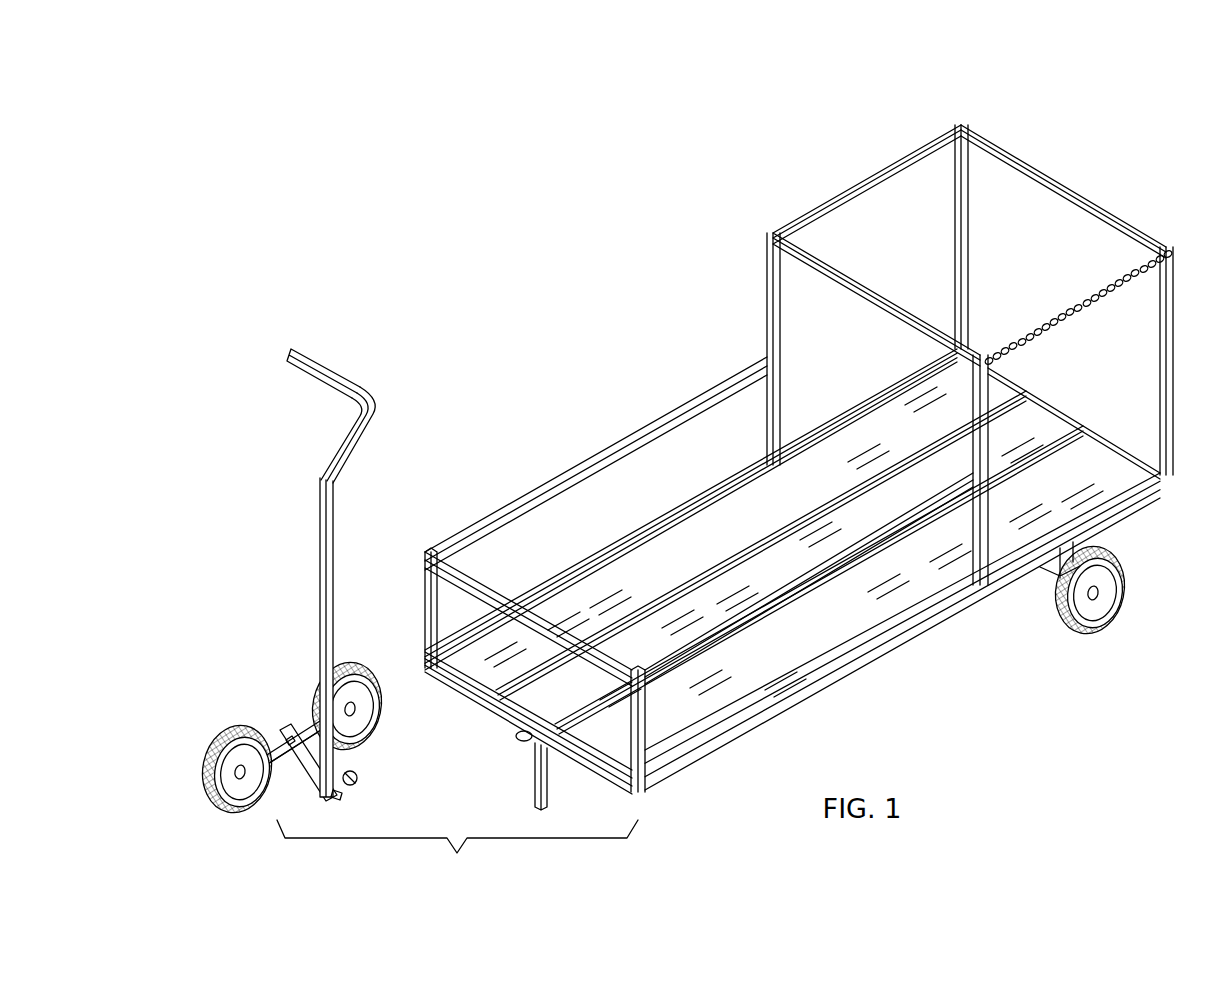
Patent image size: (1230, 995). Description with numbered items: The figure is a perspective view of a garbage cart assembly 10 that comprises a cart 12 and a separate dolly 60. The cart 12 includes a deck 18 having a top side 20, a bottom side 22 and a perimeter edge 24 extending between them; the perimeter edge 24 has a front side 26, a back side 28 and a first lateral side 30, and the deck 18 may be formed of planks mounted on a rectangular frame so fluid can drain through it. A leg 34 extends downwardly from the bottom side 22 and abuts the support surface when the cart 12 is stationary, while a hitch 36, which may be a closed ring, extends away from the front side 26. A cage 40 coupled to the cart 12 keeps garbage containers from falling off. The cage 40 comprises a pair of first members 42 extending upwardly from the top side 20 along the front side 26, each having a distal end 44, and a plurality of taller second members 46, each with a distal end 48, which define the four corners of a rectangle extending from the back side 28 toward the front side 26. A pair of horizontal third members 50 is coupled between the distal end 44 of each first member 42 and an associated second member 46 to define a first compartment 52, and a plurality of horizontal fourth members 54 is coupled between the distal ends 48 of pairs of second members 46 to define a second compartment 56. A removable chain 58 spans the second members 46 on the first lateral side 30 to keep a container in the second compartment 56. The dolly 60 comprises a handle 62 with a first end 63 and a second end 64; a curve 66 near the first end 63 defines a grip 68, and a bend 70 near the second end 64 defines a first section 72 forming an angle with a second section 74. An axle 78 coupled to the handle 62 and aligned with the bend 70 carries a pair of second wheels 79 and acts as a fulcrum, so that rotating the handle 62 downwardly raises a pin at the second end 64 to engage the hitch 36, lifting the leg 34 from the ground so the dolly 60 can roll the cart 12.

The garbage cart assembly 10 is at (450, 208).
The cart 12 is at (1016, 632).
The deck 18 is at (710, 742).
The top side 20 is at (677, 550).
The bottom side 22 is at (845, 700).
The perimeter edge 24 is at (895, 645).
The front side 26 is at (497, 712).
The back side 28 is at (1176, 478).
The first lateral side 30 is at (850, 690).
The leg 34 is at (548, 784).
The hitch 36 is at (520, 742).
The cage 40 is at (717, 234).
The first members 42 is at (642, 740).
The distal end 44 is at (427, 553).
The second members 46 is at (978, 410).
The distal end 48 is at (773, 232).
The third members 50 is at (670, 650).
The first compartment 52 is at (705, 480).
The fourth members 54 is at (793, 247).
The second compartment 56 is at (1018, 212).
The chain 58 is at (1125, 282).
The dolly 60 is at (268, 571).
The handle 62 is at (335, 590).
The first end 63 is at (286, 353).
The second end 64 is at (358, 782).
The curve 66 is at (373, 408).
The grip 68 is at (323, 333).
The bend 70 is at (281, 804).
The first section 72 is at (300, 632).
The second section 74 is at (352, 802).
The axle 78 is at (288, 743).
The second wheels 79 is at (210, 758).